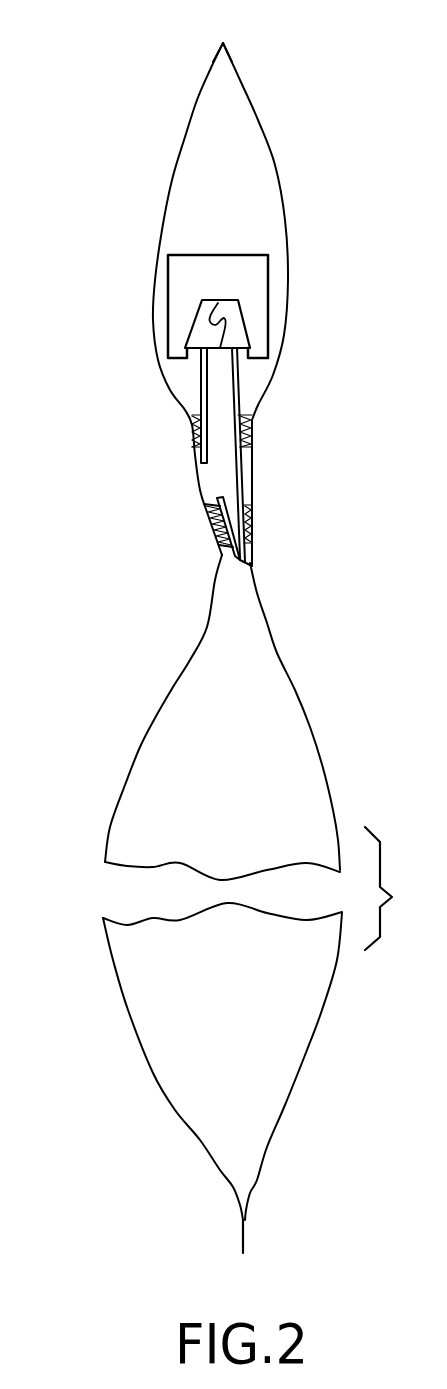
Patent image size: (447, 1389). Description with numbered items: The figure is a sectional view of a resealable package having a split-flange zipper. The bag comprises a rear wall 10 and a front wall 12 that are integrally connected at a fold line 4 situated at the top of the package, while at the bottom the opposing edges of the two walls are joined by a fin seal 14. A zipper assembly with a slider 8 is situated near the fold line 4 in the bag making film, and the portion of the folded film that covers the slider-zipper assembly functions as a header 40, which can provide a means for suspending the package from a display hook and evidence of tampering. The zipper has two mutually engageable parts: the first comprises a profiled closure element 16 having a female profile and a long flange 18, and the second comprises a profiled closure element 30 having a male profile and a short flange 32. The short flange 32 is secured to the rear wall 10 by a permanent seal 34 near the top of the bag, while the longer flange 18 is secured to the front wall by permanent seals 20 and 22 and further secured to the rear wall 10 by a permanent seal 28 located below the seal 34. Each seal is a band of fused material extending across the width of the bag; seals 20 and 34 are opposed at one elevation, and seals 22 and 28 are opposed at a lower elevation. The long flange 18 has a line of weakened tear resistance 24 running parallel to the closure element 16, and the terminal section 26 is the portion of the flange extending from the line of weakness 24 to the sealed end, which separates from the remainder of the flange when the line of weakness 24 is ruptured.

The header 40 is at (180, 134).
The fold line 4 is at (224, 44).
The slider 8 is at (268, 264).
The profiled closure element 16 is at (232, 312).
The profiled closure element 30 is at (203, 322).
The short flange 32 is at (207, 392).
The long flange 18 is at (239, 382).
The permanent seal 34 is at (190, 430).
The permanent seal 20 is at (249, 430).
The permanent seal 22 is at (249, 525).
The permanent seal 28 is at (217, 533).
The terminal section 26 is at (222, 557).
The line of weakened tear resistance 24 is at (244, 567).
The rear wall 10 is at (140, 760).
The front wall 12 is at (311, 740).
The fin seal 14 is at (245, 1230).